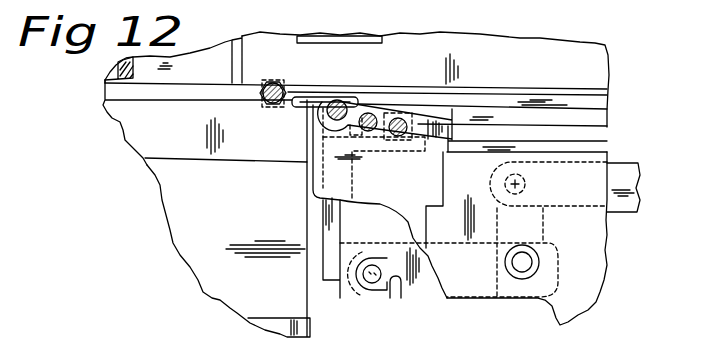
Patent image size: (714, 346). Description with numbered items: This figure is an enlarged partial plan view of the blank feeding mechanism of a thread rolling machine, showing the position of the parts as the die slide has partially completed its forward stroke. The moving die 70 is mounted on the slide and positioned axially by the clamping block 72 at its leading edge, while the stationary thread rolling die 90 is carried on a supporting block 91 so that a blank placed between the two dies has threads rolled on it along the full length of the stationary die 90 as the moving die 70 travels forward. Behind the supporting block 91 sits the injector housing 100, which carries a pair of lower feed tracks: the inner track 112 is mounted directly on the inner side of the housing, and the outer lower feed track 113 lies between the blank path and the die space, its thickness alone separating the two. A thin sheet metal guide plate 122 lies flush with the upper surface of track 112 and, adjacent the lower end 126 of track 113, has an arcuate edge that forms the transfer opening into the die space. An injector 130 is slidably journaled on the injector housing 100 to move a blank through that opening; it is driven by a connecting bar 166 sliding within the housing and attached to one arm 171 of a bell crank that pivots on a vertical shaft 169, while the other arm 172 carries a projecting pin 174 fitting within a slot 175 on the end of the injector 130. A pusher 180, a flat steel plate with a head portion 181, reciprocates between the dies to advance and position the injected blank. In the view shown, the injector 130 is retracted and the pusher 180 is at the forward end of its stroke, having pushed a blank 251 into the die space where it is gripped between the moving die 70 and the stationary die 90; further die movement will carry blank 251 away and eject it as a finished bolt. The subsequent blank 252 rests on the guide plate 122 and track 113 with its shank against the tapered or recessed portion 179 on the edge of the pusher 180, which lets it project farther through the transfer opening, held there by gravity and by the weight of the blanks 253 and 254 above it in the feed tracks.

The moving die 70 is at (504, 65).
The clamping block 72 is at (204, 72).
The stationary thread rolling die 90 is at (190, 138).
The supporting block 91 is at (245, 223).
The injector housing 100 is at (602, 288).
The lower feed track 112 is at (609, 143).
The outer lower feed track 113 is at (609, 111).
The guide plate 122 is at (408, 196).
The lower end of track 126 is at (347, 99).
The injector 130 is at (350, 216).
The connecting bar 166 is at (638, 205).
The vertical shaft 169 is at (524, 181).
The arm of bell crank 171 is at (550, 220).
The arm of bell crank 172 is at (430, 292).
The projecting pin 174 is at (372, 288).
The slot 175 is at (396, 294).
The tapered or recessed portion 179 is at (302, 98).
The pusher 180 is at (512, 100).
The head portion 181 is at (313, 96).
The blank 251 is at (270, 105).
The subsequent blank 252 is at (336, 100).
The blank 253 is at (372, 112).
The blank 254 is at (411, 144).